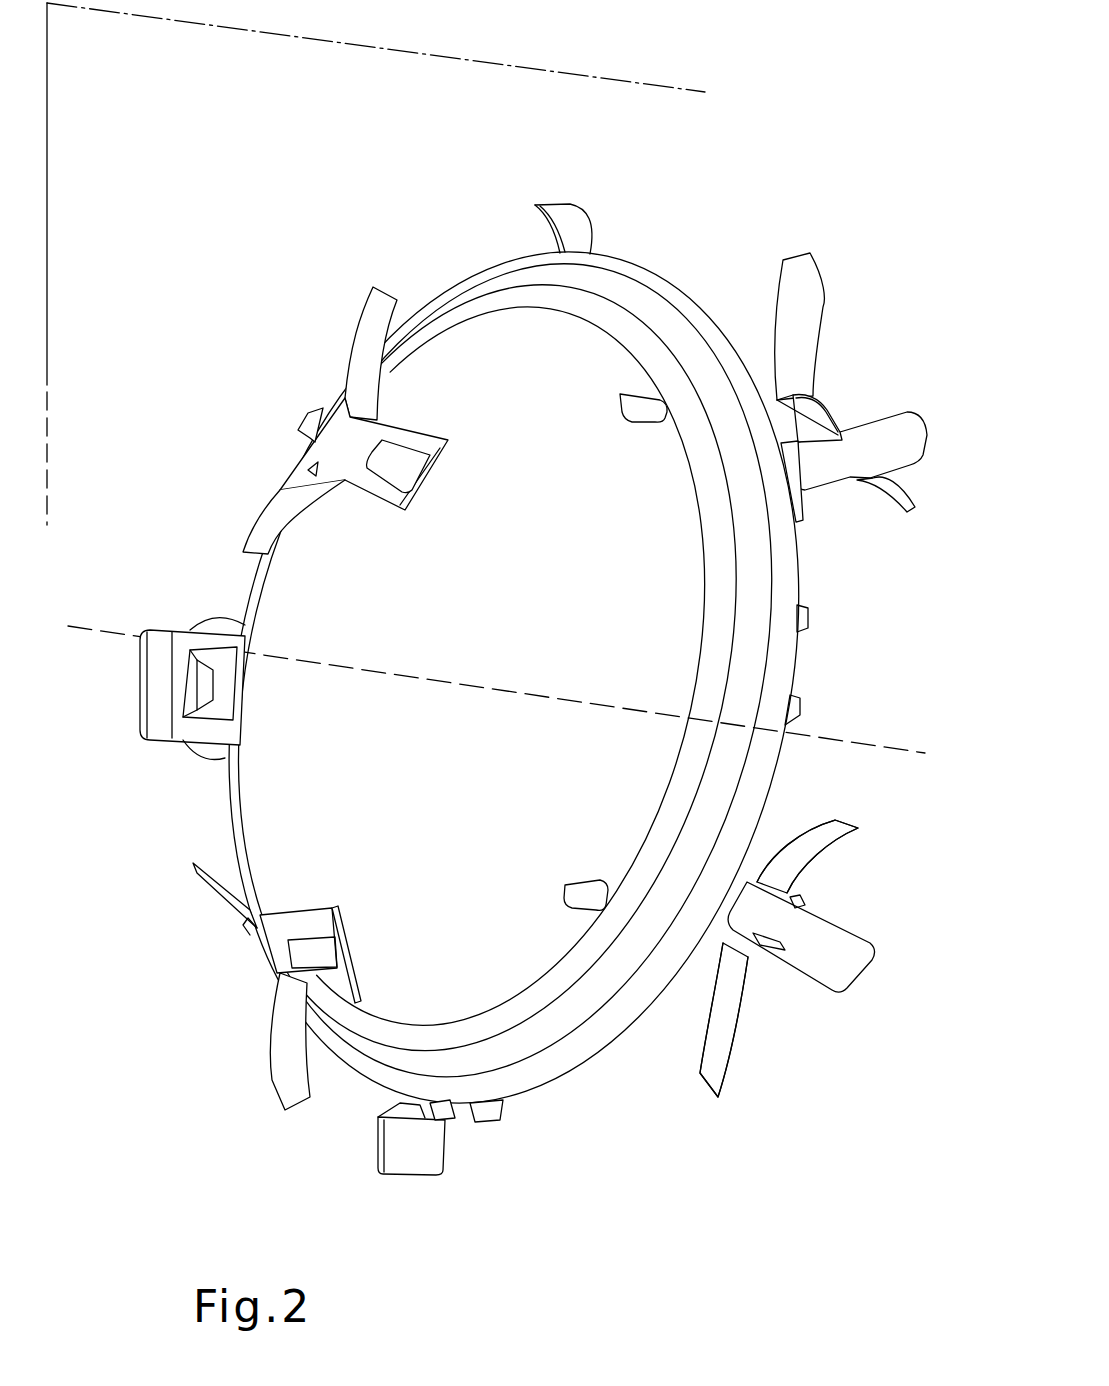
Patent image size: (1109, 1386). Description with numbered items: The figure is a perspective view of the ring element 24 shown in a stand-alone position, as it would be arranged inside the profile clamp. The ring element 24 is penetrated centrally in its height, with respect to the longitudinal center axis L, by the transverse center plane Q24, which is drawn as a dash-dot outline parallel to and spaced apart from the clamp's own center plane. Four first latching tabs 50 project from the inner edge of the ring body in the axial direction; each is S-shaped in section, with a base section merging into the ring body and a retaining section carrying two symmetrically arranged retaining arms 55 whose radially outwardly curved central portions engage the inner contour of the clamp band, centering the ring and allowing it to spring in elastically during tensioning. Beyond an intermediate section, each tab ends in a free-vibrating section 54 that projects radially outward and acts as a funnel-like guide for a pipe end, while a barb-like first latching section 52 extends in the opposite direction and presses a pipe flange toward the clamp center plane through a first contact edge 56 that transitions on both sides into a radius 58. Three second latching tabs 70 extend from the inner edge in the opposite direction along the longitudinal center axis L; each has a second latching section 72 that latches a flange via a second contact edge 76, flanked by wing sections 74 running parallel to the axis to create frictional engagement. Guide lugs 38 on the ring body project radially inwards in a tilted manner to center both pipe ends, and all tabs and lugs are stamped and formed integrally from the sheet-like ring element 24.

The transverse center plane Q24 is at (212, 28).
The ring element 24 is at (468, 278).
The guide lugs 38 is at (300, 428).
The first latching tabs 50 is at (340, 356).
The first latching section 52 is at (827, 443).
The free-vibrating section 54 is at (920, 463).
The retaining arms 55 is at (847, 850).
The first contact edge 56 is at (803, 493).
The radius 58 is at (790, 437).
The second latching tabs 70 is at (130, 672).
The second latching section 72 is at (203, 707).
The wing sections 74 is at (222, 617).
The second contact edge 76 is at (213, 685).
The longitudinal center axis L is at (496, 689).